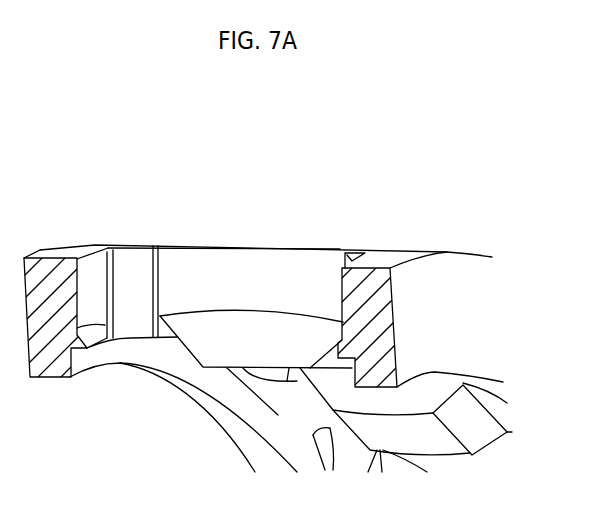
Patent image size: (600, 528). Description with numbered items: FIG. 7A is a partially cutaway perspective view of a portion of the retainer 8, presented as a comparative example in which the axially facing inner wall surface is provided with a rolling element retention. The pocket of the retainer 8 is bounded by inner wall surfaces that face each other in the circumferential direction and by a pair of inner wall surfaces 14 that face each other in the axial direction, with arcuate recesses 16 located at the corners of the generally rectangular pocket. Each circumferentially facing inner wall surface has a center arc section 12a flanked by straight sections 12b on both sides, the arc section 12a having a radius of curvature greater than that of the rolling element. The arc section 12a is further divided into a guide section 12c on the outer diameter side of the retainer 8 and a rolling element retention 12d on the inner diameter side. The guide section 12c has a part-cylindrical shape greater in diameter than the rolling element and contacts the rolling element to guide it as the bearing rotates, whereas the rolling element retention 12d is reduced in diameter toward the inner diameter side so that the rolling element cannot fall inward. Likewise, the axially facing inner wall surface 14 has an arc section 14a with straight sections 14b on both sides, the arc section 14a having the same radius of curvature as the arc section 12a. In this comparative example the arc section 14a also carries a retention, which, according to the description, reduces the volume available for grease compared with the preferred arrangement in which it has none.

The retainer 8 is at (407, 225).
The arc section 12a is at (307, 190).
The straight section 12b is at (158, 260).
The guide section 12c is at (240, 277).
The rolling element retention 12d is at (270, 333).
The inner wall surface 14 is at (107, 190).
The arc section 14a is at (87, 272).
The straight section 14b is at (115, 273).
The arcuate recess 16 is at (135, 273).